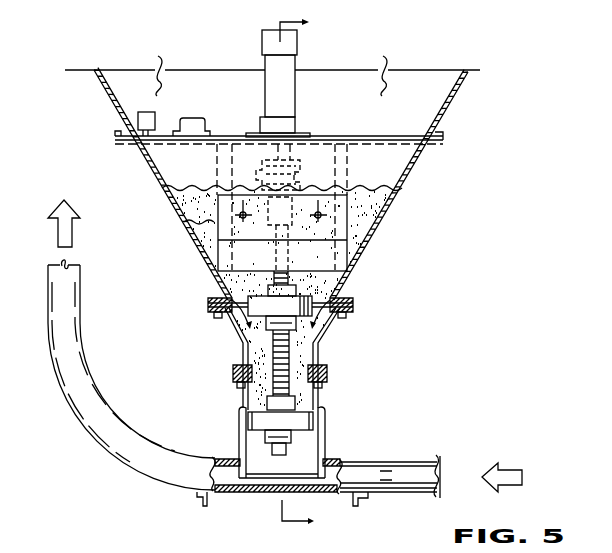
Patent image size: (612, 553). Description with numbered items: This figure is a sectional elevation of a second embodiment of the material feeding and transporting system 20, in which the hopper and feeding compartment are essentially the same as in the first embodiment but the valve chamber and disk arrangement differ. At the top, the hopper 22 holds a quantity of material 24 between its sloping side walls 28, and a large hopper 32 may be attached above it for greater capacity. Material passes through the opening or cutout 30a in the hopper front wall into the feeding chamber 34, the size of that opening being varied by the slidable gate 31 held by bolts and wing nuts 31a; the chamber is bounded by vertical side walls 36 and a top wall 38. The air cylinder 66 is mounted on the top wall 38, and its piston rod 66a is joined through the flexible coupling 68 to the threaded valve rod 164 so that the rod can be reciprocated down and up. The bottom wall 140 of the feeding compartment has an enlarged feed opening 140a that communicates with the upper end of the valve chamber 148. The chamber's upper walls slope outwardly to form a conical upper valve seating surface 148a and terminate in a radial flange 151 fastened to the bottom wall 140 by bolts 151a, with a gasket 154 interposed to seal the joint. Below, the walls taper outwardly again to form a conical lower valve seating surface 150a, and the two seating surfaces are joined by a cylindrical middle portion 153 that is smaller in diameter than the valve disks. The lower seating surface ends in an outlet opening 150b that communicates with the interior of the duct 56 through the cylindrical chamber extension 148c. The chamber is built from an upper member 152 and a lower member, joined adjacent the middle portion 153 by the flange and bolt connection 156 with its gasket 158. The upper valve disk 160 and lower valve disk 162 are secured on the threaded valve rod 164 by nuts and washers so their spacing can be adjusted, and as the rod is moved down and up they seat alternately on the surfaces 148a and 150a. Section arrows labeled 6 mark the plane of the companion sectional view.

The section line 6 is at (305, 277).
The material feeding and transporting system 20 is at (457, 275).
The hopper 22 is at (349, 215).
The material 24 is at (398, 186).
The sloping side walls 28 is at (380, 226).
The opening or cutout 30a is at (349, 240).
The slidable gate 31 is at (218, 207).
The bolts and wing nuts 31a is at (370, 212).
The large hopper 32 is at (452, 107).
The feeding chamber 34 is at (305, 278).
The vertical side walls 36 is at (218, 222).
The top wall 38 is at (233, 136).
The duct 56 is at (418, 462).
The air cylinder 66 is at (296, 103).
The piston rod 66a is at (293, 171).
The flexible coupling 68 is at (346, 174).
The bottom wall 140 is at (340, 292).
The feed opening 140a is at (226, 298).
The valve chamber 148 is at (352, 381).
The upper valve seating surface 148a is at (308, 332).
The cylindrical chamber extension 148c is at (241, 448).
The lower valve seating surface 150a is at (320, 422).
The outlet opening 150b is at (323, 438).
The radial flange 151 is at (416, 316).
The bolts 151a is at (343, 316).
The upper member 152 is at (242, 337).
The cylindrical middle portion 153 is at (302, 358).
The gasket 154 is at (353, 312).
The flange and bolt connection 156 is at (238, 363).
The gasket 158 is at (238, 378).
The upper valve disk 160 is at (264, 326).
The lower valve disk 162 is at (305, 437).
The threaded valve rod 164 is at (312, 400).